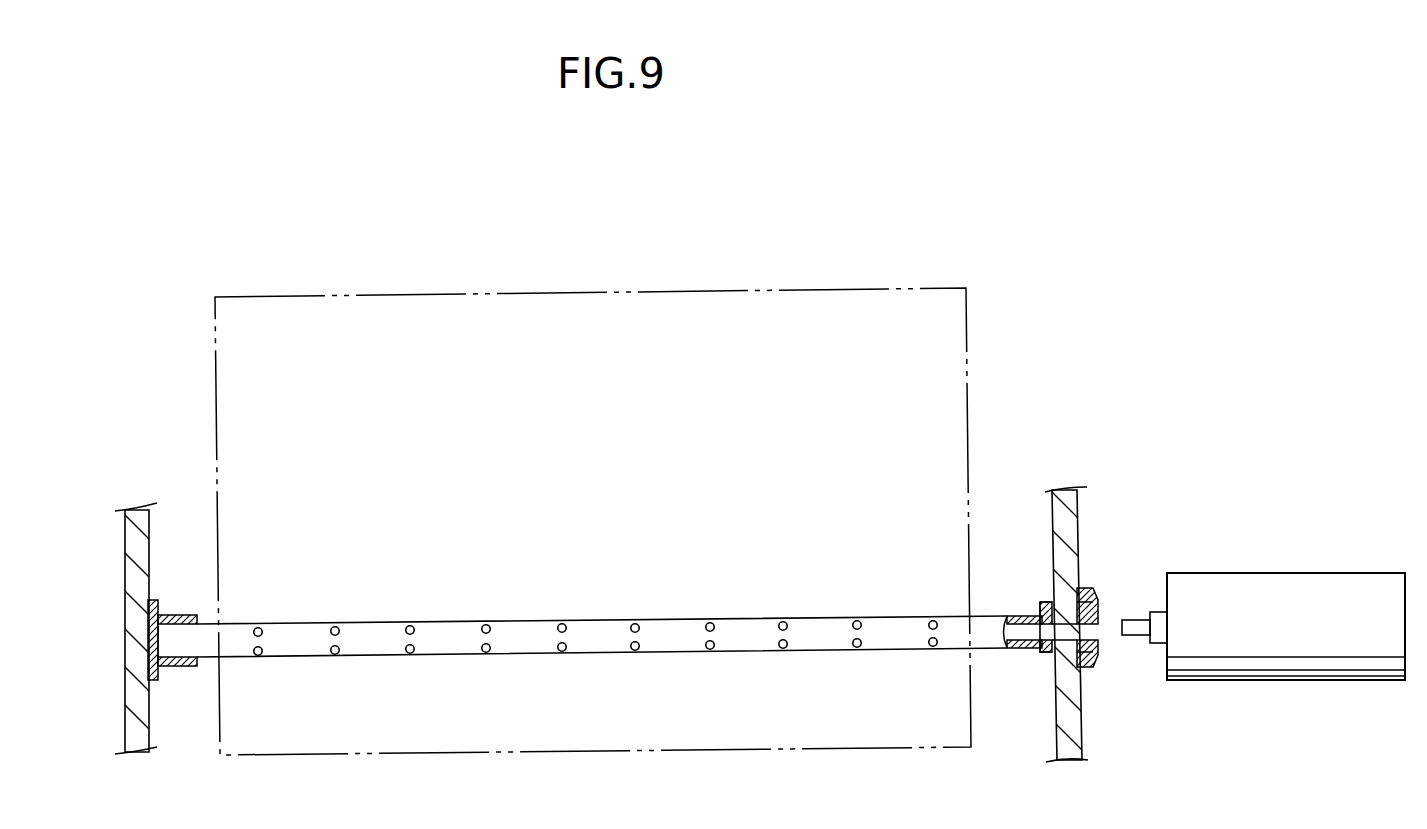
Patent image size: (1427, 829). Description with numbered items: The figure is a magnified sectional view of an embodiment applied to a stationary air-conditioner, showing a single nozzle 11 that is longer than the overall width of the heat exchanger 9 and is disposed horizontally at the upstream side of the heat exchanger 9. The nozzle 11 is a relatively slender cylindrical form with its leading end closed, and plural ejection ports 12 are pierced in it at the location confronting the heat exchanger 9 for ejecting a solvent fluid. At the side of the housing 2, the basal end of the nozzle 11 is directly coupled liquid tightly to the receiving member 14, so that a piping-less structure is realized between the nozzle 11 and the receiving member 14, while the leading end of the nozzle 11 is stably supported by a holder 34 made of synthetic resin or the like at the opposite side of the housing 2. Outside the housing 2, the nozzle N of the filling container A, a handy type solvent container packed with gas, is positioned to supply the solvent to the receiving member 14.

The housing 2 is at (124, 533).
The heat exchanger 9 is at (713, 290).
The holder 34 is at (175, 613).
The nozzle 11 is at (670, 618).
The ejection ports 12 is at (566, 629).
The receiving member 14 is at (1094, 661).
The nozzle of the filling container N is at (1143, 617).
The filling container A is at (1300, 648).